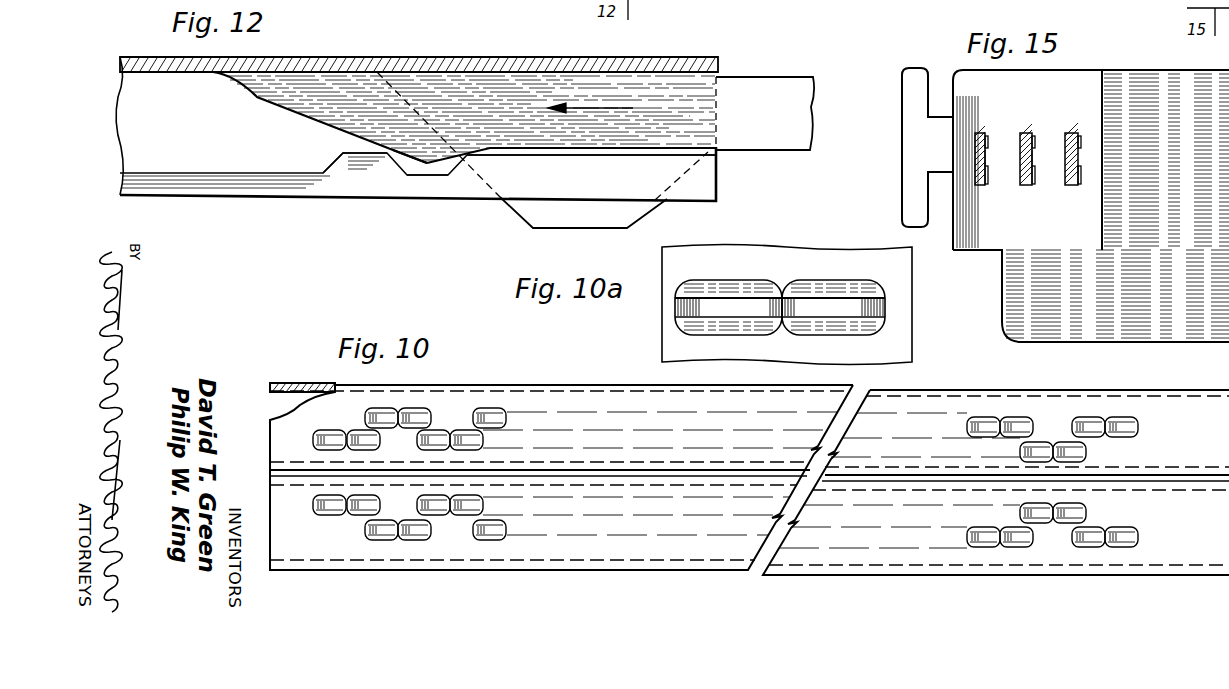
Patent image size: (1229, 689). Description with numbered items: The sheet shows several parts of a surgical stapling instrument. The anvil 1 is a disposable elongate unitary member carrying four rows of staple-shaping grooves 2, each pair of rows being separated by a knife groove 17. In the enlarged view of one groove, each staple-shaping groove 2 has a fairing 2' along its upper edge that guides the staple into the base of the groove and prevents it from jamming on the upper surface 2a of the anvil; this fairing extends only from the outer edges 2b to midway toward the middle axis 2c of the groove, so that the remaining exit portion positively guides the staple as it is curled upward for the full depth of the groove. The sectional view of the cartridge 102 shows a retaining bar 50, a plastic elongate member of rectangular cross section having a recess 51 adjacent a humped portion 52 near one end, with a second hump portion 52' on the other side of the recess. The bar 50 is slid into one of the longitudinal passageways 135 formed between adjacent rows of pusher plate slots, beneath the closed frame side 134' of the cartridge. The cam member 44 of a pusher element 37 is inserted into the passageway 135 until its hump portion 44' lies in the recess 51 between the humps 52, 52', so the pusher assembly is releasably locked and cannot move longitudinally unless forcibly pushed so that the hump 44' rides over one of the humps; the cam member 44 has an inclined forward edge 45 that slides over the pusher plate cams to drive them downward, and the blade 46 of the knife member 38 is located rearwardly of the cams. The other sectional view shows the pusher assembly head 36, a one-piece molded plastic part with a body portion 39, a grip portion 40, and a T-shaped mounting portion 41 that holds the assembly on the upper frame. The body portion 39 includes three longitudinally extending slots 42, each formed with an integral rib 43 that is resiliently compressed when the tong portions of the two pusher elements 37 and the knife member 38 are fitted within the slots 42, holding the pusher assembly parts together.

In FIG. 10A, the anvil 1 is at (795, 250).
In FIG. 10, the anvil 1 is at (540, 384).
In FIG. 10A, the staple-shaping grooves 2 is at (728, 280).
In FIG. 10, the staple-shaping grooves 2 is at (725, 482).
In FIG. 10A, the upper surface of the anvil 2a is at (708, 272).
In FIG. 10A, the fairing 2' is at (833, 280).
In FIG. 10A, the outer edges of the groove 2b is at (676, 305).
In FIG. 10A, the middle axis of the groove 2c is at (775, 313).
In FIG. 10, the knife groove 17 is at (1185, 487).
In FIG. 15, the head portion 36 is at (1137, 78).
In FIG. 12, the pusher elements 37 is at (750, 90).
In FIG. 15, the pusher elements 37 is at (975, 145).
In FIG. 15, the knife member 38 is at (1025, 188).
In FIG. 15, the body portion 39 is at (985, 238).
In FIG. 15, the grip portion 40 is at (1152, 322).
In FIG. 15, the T-shaped mounting portion 41 is at (915, 75).
In FIG. 15, the slots 42 is at (1027, 130).
In FIG. 15, the rib 43 is at (988, 160).
In FIG. 12, the cam member 44 is at (471, 93).
In FIG. 12, the hump portion 44' is at (430, 189).
In FIG. 12, the inclined forward edge 45 is at (290, 112).
In FIG. 12, the blade 46 is at (563, 212).
In FIG. 12, the retaining bar 50 is at (258, 185).
In FIG. 12, the recess 51 is at (430, 178).
In FIG. 12, the humped portion 52 is at (608, 177).
In FIG. 12, the hump portion 52' is at (355, 191).
In FIG. 12, the cartridge 102 is at (405, 65).
In FIG. 12, the frame side of the cartridge 134' is at (597, 48).
In FIG. 12, the longitudinal passageways 135 is at (153, 90).